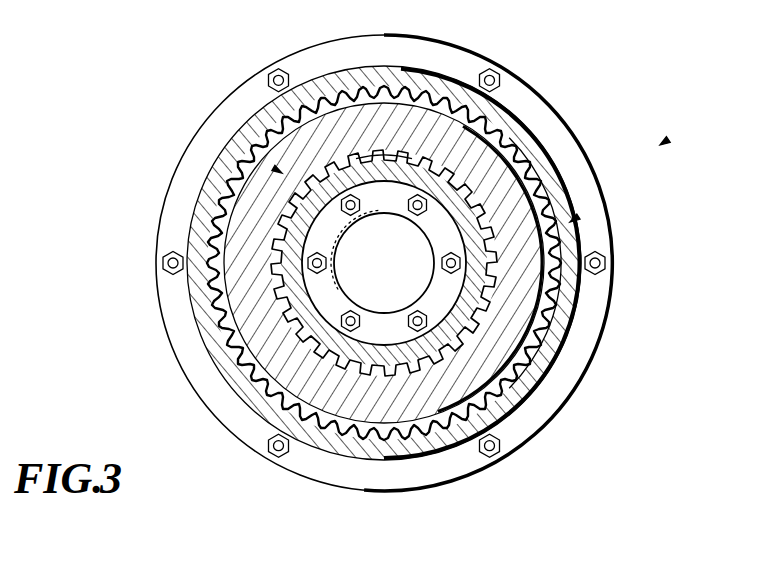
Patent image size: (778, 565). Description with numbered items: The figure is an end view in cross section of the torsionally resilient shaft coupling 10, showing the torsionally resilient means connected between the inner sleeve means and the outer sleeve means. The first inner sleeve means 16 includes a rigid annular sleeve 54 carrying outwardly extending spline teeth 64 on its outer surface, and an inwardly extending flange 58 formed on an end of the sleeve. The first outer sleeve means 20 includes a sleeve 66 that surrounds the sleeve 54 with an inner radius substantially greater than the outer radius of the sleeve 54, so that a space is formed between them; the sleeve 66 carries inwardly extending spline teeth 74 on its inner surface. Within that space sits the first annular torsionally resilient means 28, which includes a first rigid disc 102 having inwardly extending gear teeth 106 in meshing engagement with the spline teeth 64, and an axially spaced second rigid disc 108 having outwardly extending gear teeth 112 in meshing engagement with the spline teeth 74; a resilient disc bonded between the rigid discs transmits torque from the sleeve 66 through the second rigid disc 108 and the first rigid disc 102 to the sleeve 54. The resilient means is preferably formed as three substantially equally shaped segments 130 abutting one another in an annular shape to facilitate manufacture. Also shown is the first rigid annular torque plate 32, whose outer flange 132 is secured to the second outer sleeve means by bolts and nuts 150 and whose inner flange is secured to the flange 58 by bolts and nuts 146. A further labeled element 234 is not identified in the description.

The gear drive assembly 10 is at (661, 144).
The first inner sleeve means 16 is at (290, 284).
The first outer sleeve means 20 is at (240, 125).
The first annular torsionally resilient means 28 is at (278, 171).
The first rigid annular torque plate 32 is at (570, 128).
The rigid annular sleeve 54 is at (297, 212).
The inwardly extending flange 58 is at (383, 327).
The outwardly extending spline teeth 64 is at (372, 420).
The sleeve 66 is at (572, 221).
The inwardly extending spline teeth 74 is at (385, 150).
The first rigid disc 102 is at (487, 165).
The inwardly extending gear teeth 106 is at (432, 148).
The second rigid disc 108 is at (540, 187).
The outwardly extending gear teeth 112 is at (567, 337).
The segments 130 is at (332, 72).
The outer flange 132 is at (277, 60).
The nuts 146 is at (344, 307).
The nuts 150 is at (160, 257).
The housing portion 234 is at (498, 33).